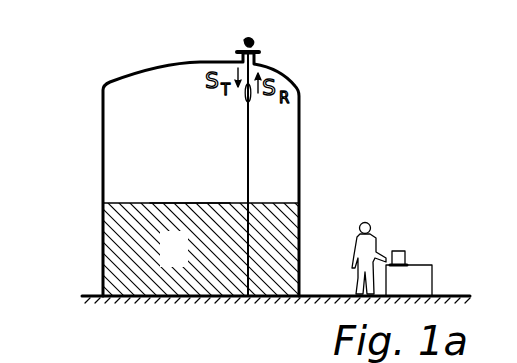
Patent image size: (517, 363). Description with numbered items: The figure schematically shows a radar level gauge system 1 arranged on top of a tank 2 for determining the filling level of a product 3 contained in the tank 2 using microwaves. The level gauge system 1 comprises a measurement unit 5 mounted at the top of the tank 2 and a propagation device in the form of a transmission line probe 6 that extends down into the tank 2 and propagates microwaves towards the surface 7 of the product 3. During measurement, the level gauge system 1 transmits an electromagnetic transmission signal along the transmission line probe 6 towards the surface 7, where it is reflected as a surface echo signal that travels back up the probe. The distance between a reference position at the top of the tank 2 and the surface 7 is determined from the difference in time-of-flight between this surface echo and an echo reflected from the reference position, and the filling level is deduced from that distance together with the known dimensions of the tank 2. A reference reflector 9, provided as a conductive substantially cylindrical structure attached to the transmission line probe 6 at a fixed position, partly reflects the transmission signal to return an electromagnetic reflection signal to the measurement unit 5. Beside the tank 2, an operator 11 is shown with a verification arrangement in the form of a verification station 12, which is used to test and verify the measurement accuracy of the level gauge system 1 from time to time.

The level gauge system 1 is at (278, 34).
The tank 2 is at (103, 104).
The product 3 is at (184, 262).
The measurement unit 5 is at (244, 41).
The transmission line probe 6 is at (250, 130).
The surface 7 is at (181, 203).
The reference reflector 9 is at (244, 97).
The operator 11 is at (378, 232).
The verification station 12 is at (423, 264).